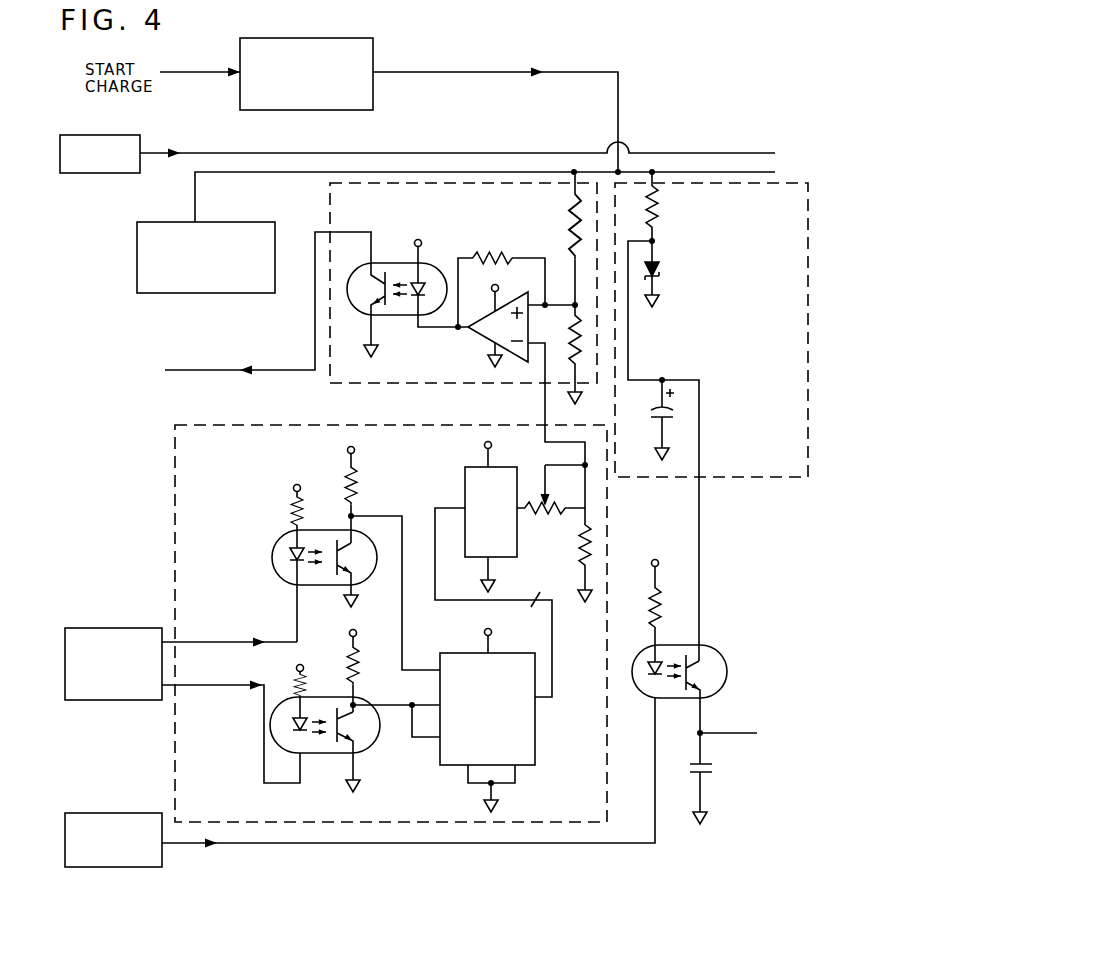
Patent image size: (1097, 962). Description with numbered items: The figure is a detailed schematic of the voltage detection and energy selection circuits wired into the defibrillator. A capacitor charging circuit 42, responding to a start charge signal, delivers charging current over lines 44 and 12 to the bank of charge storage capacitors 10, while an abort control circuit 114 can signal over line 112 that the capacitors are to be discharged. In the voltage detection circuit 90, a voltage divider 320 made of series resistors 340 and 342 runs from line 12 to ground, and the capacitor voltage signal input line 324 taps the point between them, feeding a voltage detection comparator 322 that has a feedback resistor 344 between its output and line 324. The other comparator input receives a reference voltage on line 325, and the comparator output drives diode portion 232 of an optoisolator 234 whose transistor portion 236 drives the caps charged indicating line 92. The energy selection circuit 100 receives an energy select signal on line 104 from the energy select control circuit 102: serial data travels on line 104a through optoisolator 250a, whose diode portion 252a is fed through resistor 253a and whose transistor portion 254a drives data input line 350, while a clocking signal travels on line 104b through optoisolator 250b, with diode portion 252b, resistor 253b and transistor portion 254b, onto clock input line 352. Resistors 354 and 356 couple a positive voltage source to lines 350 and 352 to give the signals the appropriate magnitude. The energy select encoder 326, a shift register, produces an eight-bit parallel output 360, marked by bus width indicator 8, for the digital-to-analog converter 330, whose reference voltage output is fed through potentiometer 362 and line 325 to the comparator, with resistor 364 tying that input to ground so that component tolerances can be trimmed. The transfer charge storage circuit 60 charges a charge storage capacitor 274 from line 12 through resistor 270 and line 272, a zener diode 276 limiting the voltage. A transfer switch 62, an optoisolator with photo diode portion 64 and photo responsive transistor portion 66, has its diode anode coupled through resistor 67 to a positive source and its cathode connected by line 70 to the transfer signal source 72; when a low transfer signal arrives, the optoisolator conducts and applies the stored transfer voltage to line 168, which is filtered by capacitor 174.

The capacitor charging circuit 42 is at (378, 54).
The line 44 is at (458, 72).
The line 112 is at (403, 153).
The abort control circuit 114 is at (128, 135).
The line 12 is at (245, 172).
The charge storage capacitors 10 is at (137, 276).
The caps charged indicating line 92 is at (190, 370).
The voltage detection circuit 90 is at (340, 372).
The transistor portion 236 is at (372, 290).
The optoisolator 234 is at (428, 263).
The diode portion 232 is at (433, 327).
The voltage detection comparator 322 is at (473, 338).
The feedback resistor 344 is at (503, 277).
The voltage divider 320 is at (563, 268).
The resistor 340 is at (572, 232).
The capacitor voltage signal input line 324 is at (563, 300).
The resistor 342 is at (575, 360).
The line 272 is at (628, 347).
The line 325 is at (544, 372).
The resistor 270 is at (688, 205).
The zener diode 276 is at (661, 276).
The charge storage capacitor 274 is at (653, 413).
The transfer charge storage circuit 60 is at (777, 466).
The energy selection circuit 100 is at (180, 538).
The line 104 is at (165, 619).
The line 104a is at (241, 641).
The line 104b is at (188, 690).
The energy select control circuit 102 is at (82, 700).
The optoisolator 250a is at (268, 546).
The light emitting diode 252a is at (290, 558).
The resistor 253a is at (294, 524).
The phototransistor 254a is at (356, 573).
The resistor 354 is at (388, 478).
The digital-to-analog converter 330 is at (465, 487).
The potentiometer 362 is at (543, 519).
The resistor 364 is at (580, 550).
The line 350 is at (404, 637).
The line 352 is at (380, 703).
The resistor 356 is at (362, 672).
The optoisolator 250b is at (276, 752).
The light emitting diode 252b is at (292, 727).
The resistor 253b is at (296, 690).
The phototransistor 254b is at (356, 741).
The eight-bit parallel output 360 is at (545, 697).
The energy select encoder 326 is at (535, 748).
The bus width indicator 8 is at (528, 594).
The line 70 is at (413, 843).
The transfer signal source 72 is at (113, 813).
The transfer switch 62 is at (731, 643).
The photo diode portion 64 is at (646, 672).
The photo responsive transistor portion 66 is at (690, 680).
The resistor 67 is at (661, 607).
The line 168 is at (740, 733).
The filtering capacitor 174 is at (712, 772).